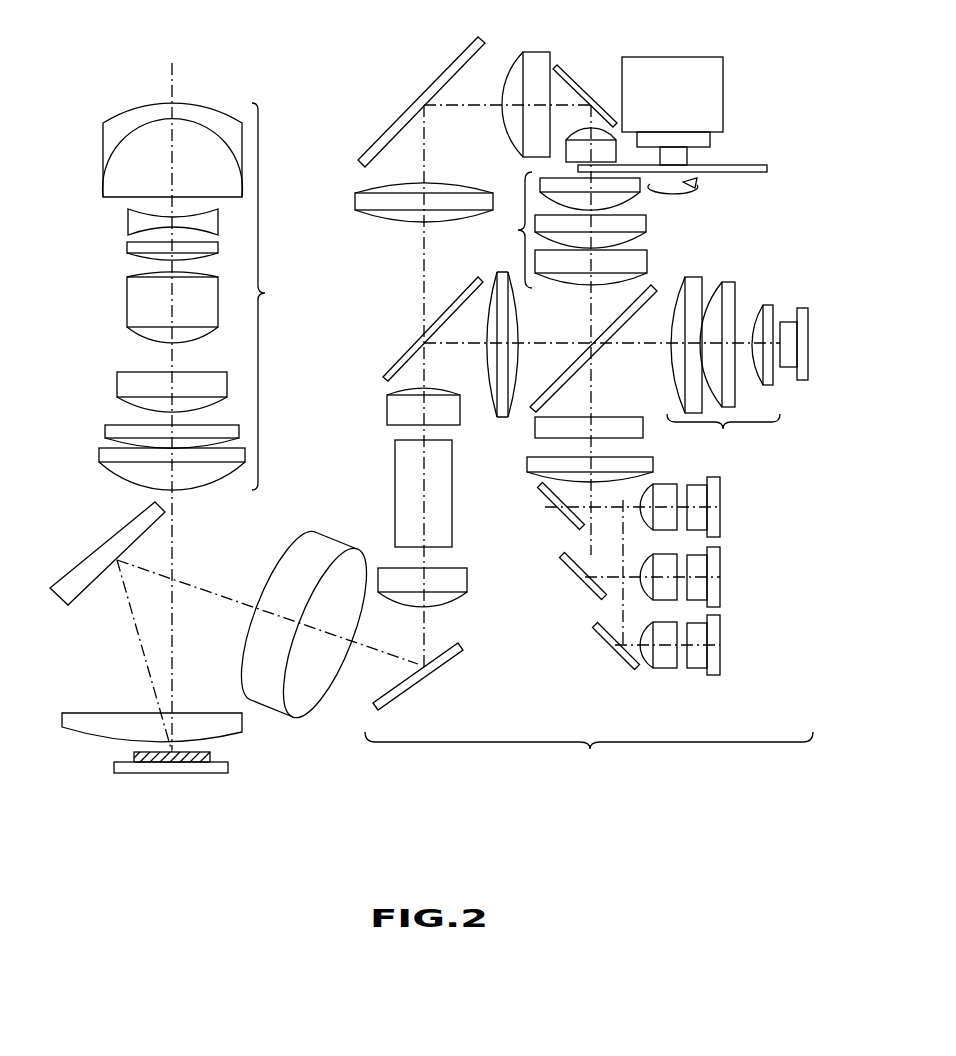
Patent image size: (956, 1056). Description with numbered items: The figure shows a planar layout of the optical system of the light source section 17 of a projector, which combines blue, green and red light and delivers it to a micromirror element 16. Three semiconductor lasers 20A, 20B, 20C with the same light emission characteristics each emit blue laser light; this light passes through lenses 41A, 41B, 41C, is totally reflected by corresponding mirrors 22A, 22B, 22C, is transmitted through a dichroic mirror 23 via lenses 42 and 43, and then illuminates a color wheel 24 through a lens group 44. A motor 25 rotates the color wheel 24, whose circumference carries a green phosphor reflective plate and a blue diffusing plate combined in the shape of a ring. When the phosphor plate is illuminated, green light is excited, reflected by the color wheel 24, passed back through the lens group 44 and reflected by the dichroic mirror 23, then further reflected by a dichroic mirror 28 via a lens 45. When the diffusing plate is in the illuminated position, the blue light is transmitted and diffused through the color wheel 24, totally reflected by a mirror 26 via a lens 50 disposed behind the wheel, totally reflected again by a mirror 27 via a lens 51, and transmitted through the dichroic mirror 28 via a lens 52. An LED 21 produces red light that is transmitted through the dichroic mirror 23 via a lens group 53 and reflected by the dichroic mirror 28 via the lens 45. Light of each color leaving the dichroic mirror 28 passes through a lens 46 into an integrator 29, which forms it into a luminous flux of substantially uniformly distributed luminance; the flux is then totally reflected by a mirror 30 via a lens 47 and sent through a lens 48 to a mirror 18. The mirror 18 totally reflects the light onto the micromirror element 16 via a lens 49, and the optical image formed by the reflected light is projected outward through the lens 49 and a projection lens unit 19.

The micromirror element 16 is at (155, 774).
The light source section 17 is at (589, 755).
The mirror 18 is at (93, 560).
The projection lens unit 19 is at (200, 296).
The semiconductor laser 20A is at (720, 505).
The semiconductor laser 20B is at (720, 558).
The semiconductor laser 20C is at (720, 650).
The LED 21 is at (802, 312).
The mirror 22A is at (558, 515).
The mirror 22B is at (587, 588).
The mirror 22C is at (620, 657).
The dichroic mirror 23 is at (650, 290).
The color wheel 24 is at (733, 173).
The motor 25 is at (705, 95).
The mirror 26 is at (577, 82).
The mirror 27 is at (383, 137).
The dichroic mirror 28 is at (400, 360).
The integrator 29 is at (442, 510).
The mirror 30 is at (452, 655).
The lens 41A is at (663, 490).
The lens 41B is at (665, 595).
The lens 41C is at (663, 660).
The lens 42 is at (537, 463).
The lens 43 is at (622, 423).
The lens group 44 is at (566, 230).
The lens 45 is at (517, 313).
The lens 46 is at (395, 410).
The lens 47 is at (452, 582).
The lens 48 is at (330, 550).
The lens 49 is at (112, 725).
The lens 50 is at (567, 157).
The lens 51 is at (537, 62).
The lens 52 is at (358, 203).
The lens group 53 is at (723, 368).